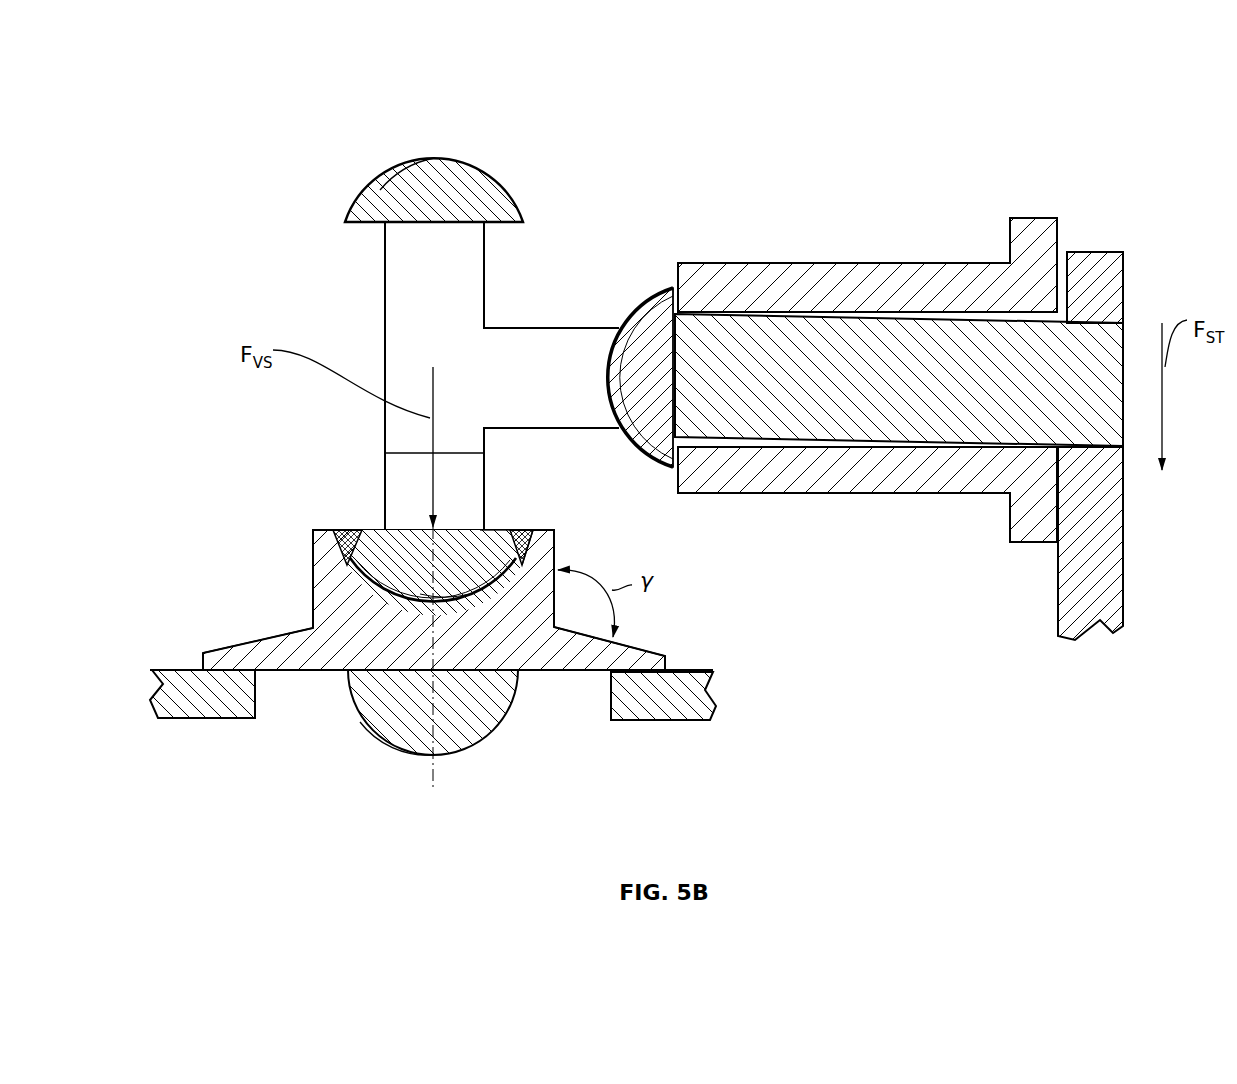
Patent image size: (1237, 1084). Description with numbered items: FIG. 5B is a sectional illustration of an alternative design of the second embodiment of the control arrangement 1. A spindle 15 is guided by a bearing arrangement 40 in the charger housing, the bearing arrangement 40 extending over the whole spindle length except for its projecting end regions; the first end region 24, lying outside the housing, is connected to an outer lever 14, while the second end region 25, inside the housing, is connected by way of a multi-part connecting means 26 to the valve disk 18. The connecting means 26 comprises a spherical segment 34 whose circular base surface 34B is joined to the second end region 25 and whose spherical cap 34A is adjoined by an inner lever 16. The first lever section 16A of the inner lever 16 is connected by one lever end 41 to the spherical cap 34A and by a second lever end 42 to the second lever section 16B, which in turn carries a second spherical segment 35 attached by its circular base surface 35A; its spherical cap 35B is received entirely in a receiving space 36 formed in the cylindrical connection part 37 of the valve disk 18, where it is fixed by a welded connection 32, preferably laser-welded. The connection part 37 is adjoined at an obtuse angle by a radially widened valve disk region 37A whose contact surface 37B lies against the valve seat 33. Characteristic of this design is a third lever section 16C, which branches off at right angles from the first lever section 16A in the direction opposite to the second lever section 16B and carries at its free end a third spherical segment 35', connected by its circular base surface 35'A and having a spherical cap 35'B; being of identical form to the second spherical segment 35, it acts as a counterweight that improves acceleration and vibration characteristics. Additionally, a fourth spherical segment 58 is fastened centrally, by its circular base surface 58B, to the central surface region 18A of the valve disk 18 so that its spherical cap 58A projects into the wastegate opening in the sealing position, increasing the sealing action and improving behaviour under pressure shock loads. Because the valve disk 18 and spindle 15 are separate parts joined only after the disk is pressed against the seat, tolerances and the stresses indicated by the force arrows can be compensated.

The control arrangement 1 is at (773, 188).
The outer lever 14 is at (1087, 602).
The spindle 15 is at (932, 306).
The inner lever 16 is at (383, 358).
The first lever section 16A is at (572, 348).
The second lever section 16B is at (402, 474).
The third lever section 16C is at (402, 309).
The valve disk 18 is at (562, 670).
The central surface region 18A is at (413, 680).
The first end region 24 is at (1110, 366).
The second end region 25 is at (680, 435).
The connecting means 26 is at (367, 257).
The welded connection 32 is at (533, 548).
The valve seat 33 is at (703, 713).
The spherical segment 34 is at (650, 287).
The spherical cap 34A is at (625, 318).
The circular base surface 34B is at (680, 300).
The second spherical segment 35 is at (378, 545).
The circular base surface 35A is at (492, 532).
The spherical cap 35B is at (466, 593).
The third spherical segment 35' is at (389, 166).
The circular base surface 35'A is at (405, 148).
The spherical cap 35'B is at (515, 174).
The receiving space 36 is at (410, 590).
The connection part 37 is at (322, 605).
The valve disk region 37A is at (620, 655).
The contact surface 37B is at (638, 672).
The bearing arrangement 40 is at (865, 485).
The lever end 41 is at (600, 420).
The second lever end 42 is at (402, 437).
The fourth spherical segment 58 is at (367, 692).
The spherical cap 58A is at (367, 722).
The circular base surface 58B is at (363, 667).